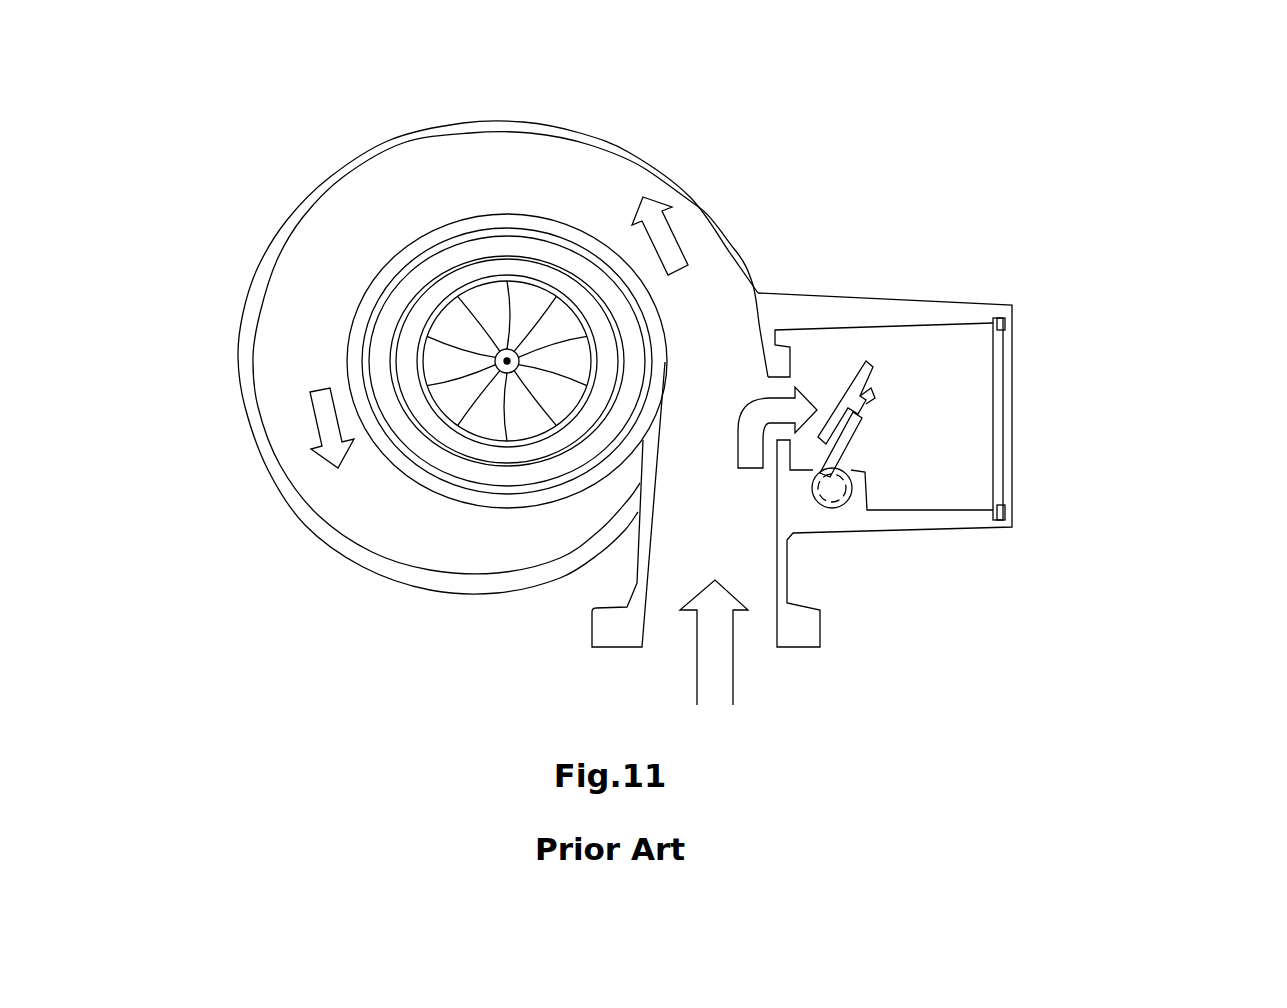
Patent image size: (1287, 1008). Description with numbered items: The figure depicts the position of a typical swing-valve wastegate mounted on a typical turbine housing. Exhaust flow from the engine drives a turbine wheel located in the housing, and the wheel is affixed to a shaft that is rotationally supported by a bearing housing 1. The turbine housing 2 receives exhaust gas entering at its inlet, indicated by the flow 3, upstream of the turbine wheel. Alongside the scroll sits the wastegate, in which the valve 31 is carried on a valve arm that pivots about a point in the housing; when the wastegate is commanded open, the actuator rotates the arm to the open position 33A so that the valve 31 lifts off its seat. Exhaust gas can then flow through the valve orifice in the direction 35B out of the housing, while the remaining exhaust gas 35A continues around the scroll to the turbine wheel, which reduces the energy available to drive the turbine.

The bearing housing 1 is at (507, 361).
The turbine housing 2 is at (292, 237).
The exhaust gas inlet flow 3 is at (715, 660).
The valve 31 is at (877, 378).
The valve arm open position 33A is at (855, 440).
The remaining exhaust gas 35A is at (660, 235).
The direction of exhaust gas flow through valve orifice 35B is at (785, 408).